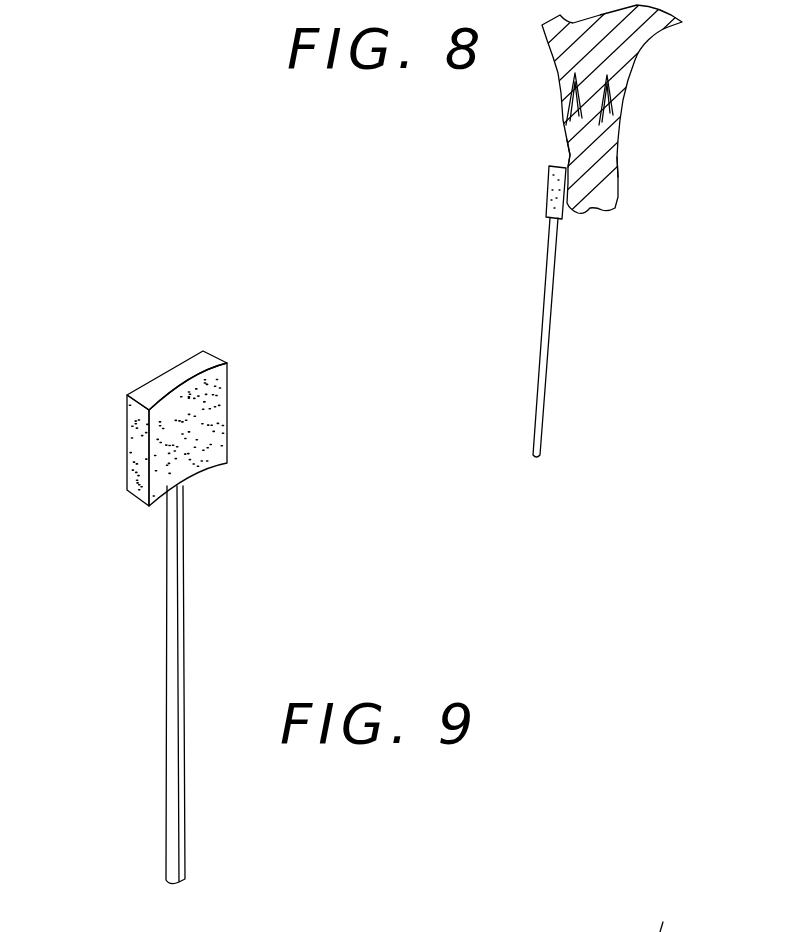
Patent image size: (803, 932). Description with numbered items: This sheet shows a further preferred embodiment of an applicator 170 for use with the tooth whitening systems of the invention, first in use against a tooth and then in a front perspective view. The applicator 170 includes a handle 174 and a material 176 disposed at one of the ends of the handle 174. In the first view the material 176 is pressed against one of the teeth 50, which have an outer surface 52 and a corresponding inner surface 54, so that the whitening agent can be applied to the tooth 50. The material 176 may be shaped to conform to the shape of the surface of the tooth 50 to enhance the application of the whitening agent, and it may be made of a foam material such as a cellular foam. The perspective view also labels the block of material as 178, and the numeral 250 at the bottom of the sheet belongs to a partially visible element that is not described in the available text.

In FIG. 8, the teeth 50 is at (630, 199).
In FIG. 8, the outer surface 52 is at (570, 155).
In FIG. 8, the inner surface 54 is at (620, 163).
In FIG. 8, the applicator 170 is at (559, 311).
In FIG. 9, the applicator 170 is at (186, 617).
In FIG. 8, the handle 174 is at (548, 335).
In FIG. 8, the material 176 is at (549, 187).
In FIG. 9, the abrasive block 178 is at (190, 388).
In FIG. 9, the instrument 250 is at (680, 910).